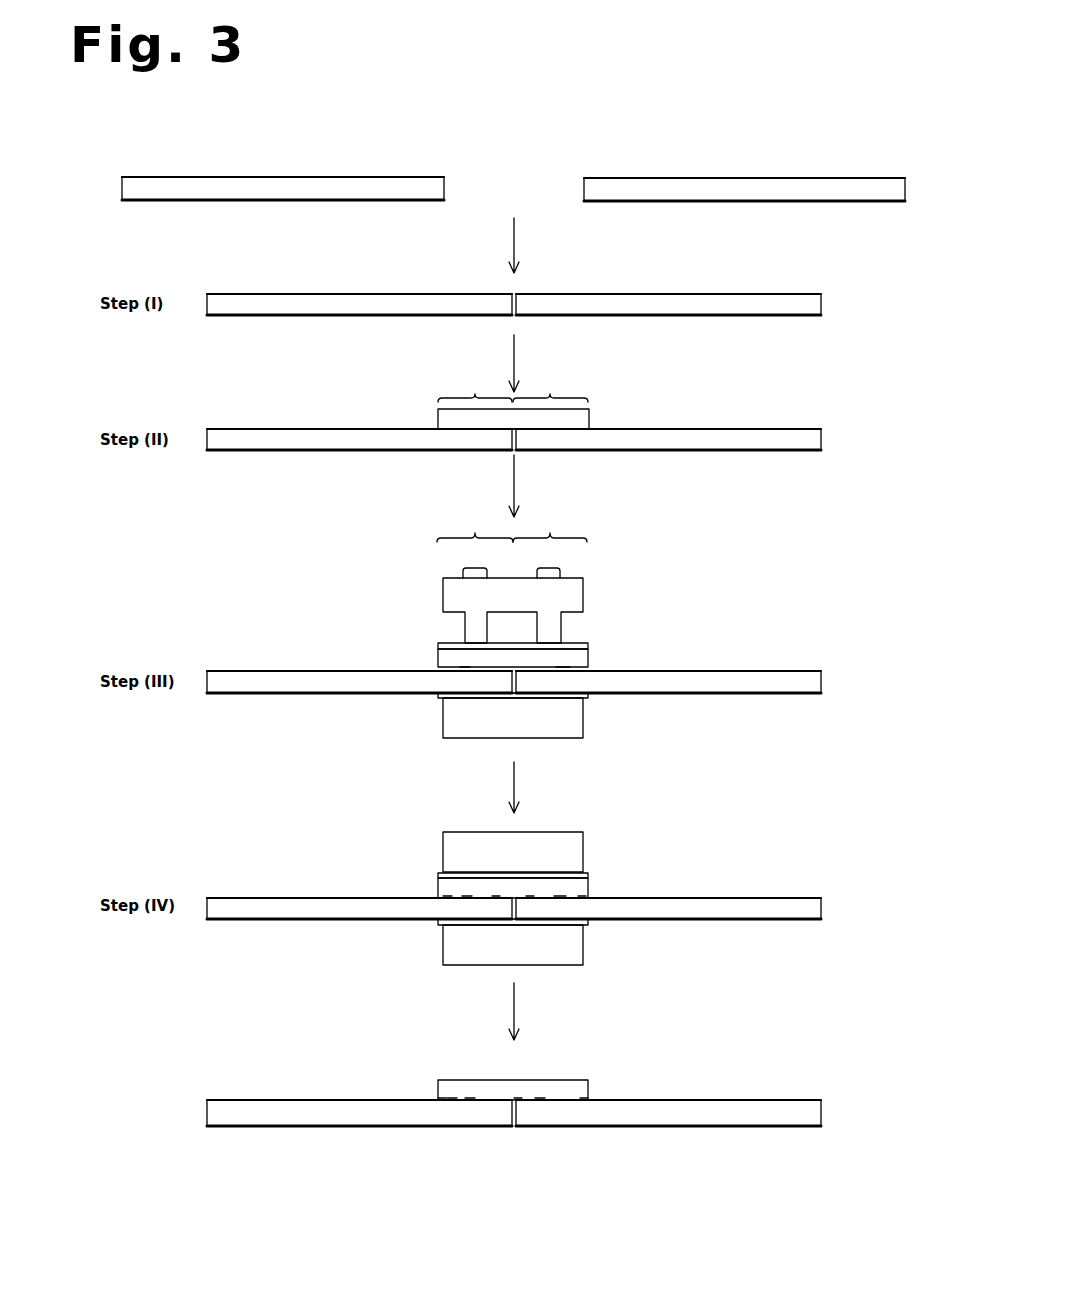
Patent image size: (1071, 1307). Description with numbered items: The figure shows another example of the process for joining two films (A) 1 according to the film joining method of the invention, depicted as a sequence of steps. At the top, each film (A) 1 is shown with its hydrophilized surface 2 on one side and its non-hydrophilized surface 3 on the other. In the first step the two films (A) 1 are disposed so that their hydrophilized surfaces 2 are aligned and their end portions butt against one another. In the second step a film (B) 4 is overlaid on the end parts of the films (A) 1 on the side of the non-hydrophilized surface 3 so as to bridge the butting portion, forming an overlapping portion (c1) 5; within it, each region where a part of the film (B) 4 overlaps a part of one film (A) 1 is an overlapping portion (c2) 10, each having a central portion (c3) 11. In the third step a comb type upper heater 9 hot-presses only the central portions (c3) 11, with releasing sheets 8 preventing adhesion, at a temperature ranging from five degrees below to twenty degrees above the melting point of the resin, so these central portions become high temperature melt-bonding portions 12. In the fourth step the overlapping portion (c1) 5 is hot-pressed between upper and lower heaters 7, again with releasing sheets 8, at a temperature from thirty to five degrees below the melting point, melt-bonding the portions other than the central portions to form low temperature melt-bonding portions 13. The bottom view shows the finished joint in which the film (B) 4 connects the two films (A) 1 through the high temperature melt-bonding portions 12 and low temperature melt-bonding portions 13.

The film (A) 1 is at (243, 187).
The hydrophilized surface 2 is at (150, 200).
The non-hydrophilized surface 3 is at (162, 177).
The film (B) 4 is at (463, 420).
The overlapping portion (c1) 5 is at (568, 428).
The upper and lower heaters 7 is at (563, 712).
The releasing sheet 8 is at (570, 646).
The comb type upper heater 9 is at (562, 597).
The overlapping portion (c2) 10 is at (512, 459).
The central portion (c3) 11 is at (549, 568).
The high temperature melt-bonding portion 12 is at (465, 667).
The low temperature melt-bonding portion 13 is at (497, 895).